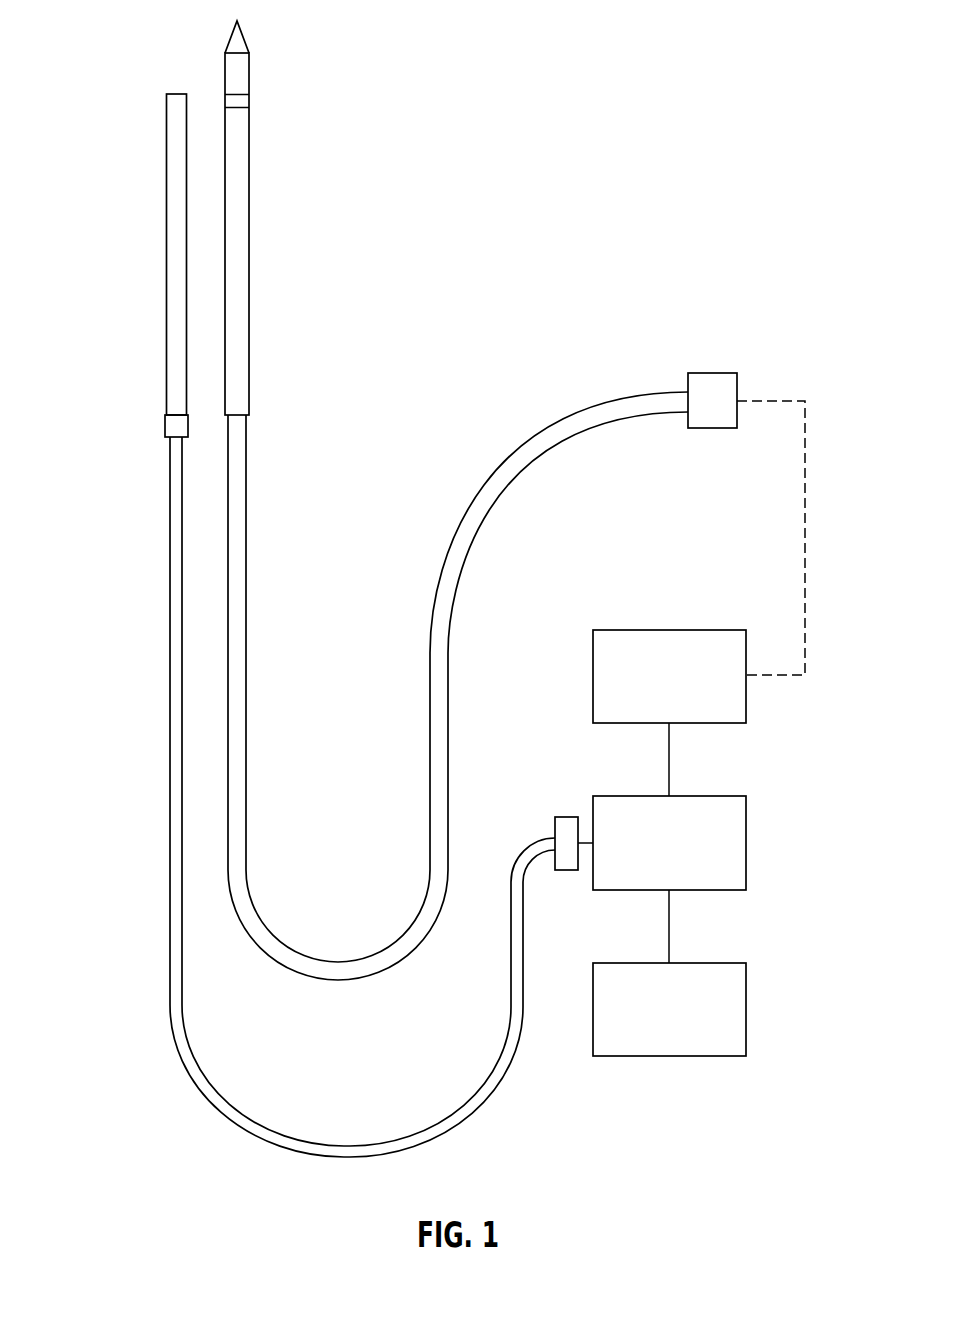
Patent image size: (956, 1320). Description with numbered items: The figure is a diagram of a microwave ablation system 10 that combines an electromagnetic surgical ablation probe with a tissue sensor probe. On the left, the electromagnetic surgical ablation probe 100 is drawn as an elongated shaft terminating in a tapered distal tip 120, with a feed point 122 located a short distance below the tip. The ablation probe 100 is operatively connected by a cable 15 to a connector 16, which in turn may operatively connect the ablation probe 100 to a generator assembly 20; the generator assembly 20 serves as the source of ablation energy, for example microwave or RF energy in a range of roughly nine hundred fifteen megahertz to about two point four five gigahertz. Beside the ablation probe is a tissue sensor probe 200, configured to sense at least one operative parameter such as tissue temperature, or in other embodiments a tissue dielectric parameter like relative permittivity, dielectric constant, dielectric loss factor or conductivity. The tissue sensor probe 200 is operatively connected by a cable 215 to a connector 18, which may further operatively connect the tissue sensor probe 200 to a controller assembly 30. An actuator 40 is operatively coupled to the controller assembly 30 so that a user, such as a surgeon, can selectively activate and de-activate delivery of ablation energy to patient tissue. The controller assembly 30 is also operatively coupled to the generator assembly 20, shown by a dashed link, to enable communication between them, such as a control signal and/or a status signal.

The microwave ablation system 10 is at (611, 134).
The cable 15 is at (247, 643).
The connector 16 is at (712, 373).
The connector 18 is at (567, 817).
The generator assembly 20 is at (627, 630).
The controller assembly 30 is at (627, 796).
The actuator 40 is at (627, 963).
The electromagnetic surgical ablation probe 100 is at (286, 207).
The tapered distal tip 120 is at (242, 42).
The feed point 122 is at (250, 100).
The tissue sensor probe 200 is at (151, 228).
The cable 215 is at (168, 643).